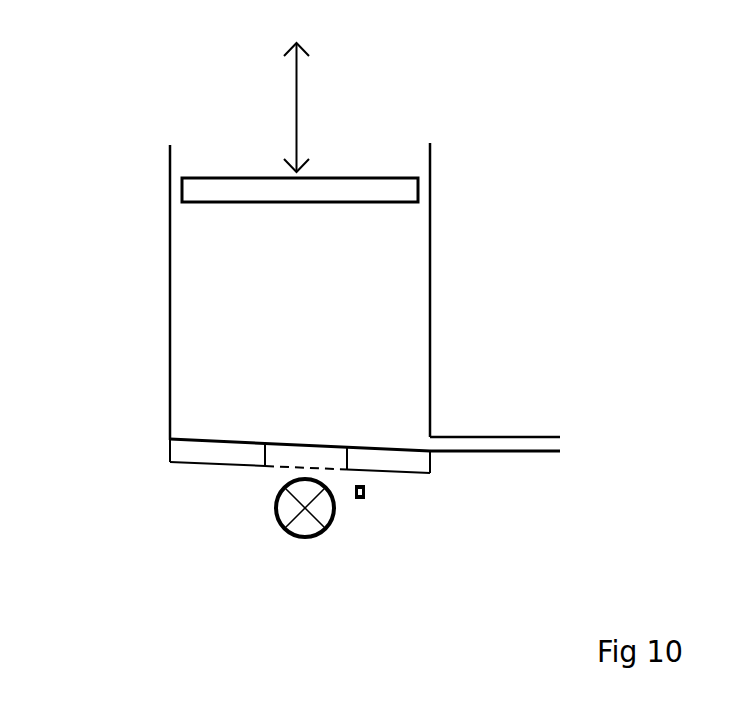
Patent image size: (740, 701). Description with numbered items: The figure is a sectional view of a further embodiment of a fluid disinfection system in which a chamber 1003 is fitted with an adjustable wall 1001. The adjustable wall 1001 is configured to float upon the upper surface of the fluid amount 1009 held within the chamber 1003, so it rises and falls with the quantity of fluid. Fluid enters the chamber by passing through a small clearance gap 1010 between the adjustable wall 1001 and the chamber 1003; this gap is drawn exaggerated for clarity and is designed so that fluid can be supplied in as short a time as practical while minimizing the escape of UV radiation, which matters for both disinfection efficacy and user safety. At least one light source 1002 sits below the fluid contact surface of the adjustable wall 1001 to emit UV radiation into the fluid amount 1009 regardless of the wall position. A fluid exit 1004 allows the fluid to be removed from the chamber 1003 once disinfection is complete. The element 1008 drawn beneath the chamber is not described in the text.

The adjustable wall 1001 is at (247, 190).
The light source 1002 is at (265, 508).
The chamber 1003 is at (162, 303).
The fluid exit 1004 is at (523, 422).
The sensor 1008 is at (333, 470).
The fluid amount 1009 is at (367, 273).
The clearance gap 1010 is at (422, 173).